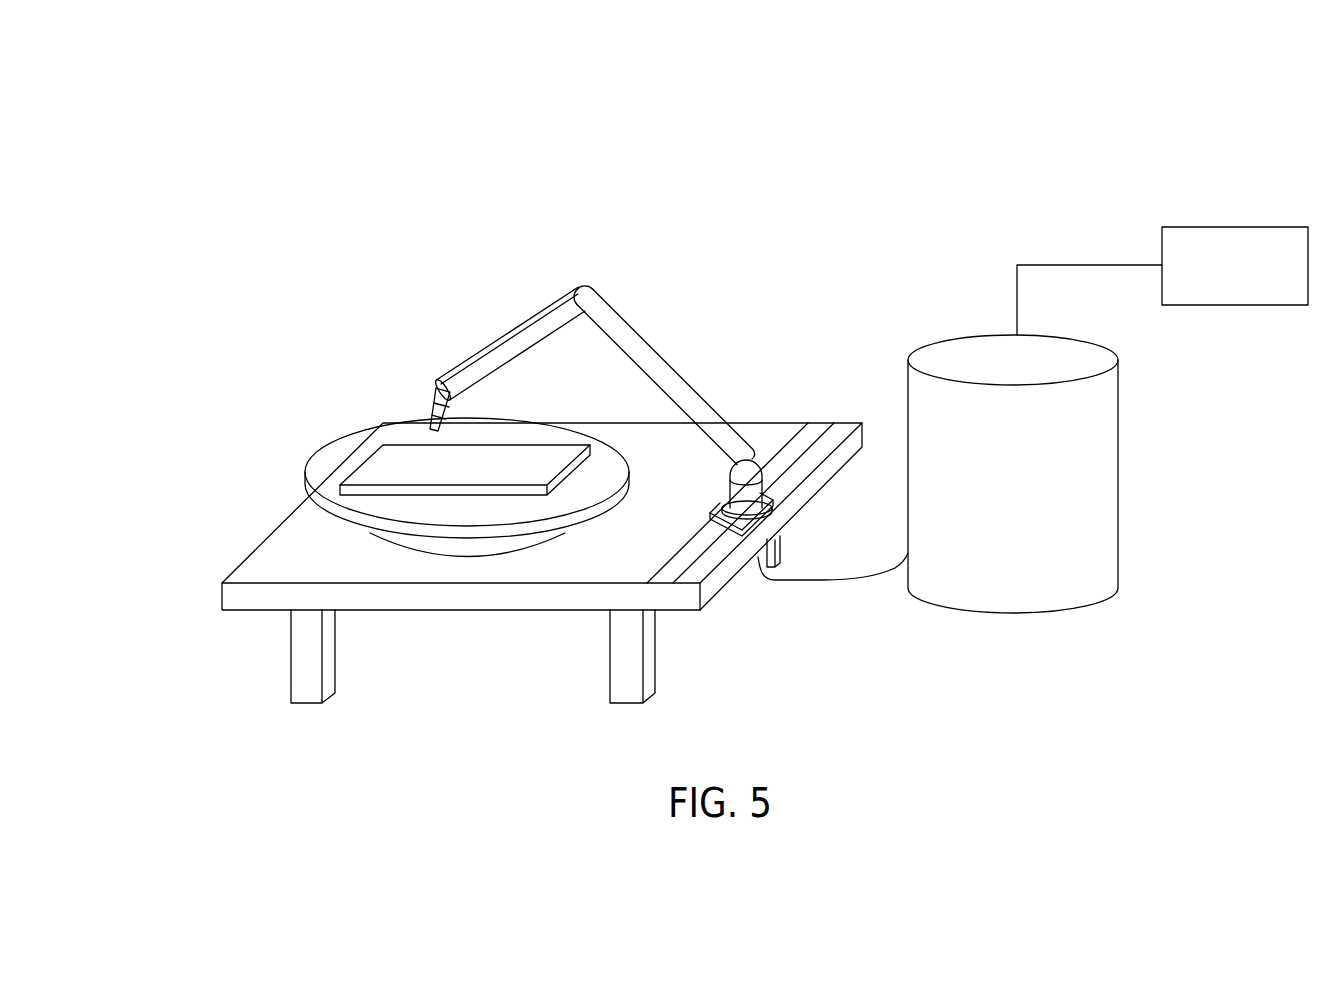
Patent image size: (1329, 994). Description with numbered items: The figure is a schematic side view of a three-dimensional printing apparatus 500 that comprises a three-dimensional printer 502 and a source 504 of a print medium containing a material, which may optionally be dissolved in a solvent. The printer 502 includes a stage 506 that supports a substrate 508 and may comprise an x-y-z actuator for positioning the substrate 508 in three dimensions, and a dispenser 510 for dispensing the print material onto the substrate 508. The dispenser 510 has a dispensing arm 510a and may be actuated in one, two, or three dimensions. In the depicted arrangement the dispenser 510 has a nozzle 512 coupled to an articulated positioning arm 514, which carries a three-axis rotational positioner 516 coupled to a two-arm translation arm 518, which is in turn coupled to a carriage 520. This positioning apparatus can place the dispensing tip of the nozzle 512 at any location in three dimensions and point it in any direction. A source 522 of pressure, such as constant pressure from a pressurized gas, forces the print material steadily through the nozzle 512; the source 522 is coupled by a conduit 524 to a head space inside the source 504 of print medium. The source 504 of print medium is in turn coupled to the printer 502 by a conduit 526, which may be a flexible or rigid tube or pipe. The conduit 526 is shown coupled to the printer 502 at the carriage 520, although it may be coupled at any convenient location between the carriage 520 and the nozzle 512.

The 3D printing apparatus 500 is at (674, 238).
The 3D printer 502 is at (290, 343).
The source of print medium 504 is at (1118, 427).
The stage 506 is at (303, 468).
The substrate 508 is at (428, 457).
The dispenser 510 is at (588, 240).
The dispensing arm 510a is at (488, 327).
The nozzle 512 is at (455, 412).
The articulated positioning arm 514 is at (658, 348).
The 3-axis rotational positioner 516 is at (433, 376).
The two-arm translation arm 518 is at (565, 285).
The carriage 520 is at (783, 482).
The source of pressure 522 is at (1222, 273).
The conduit 524 is at (1077, 263).
The conduit 526 is at (823, 588).